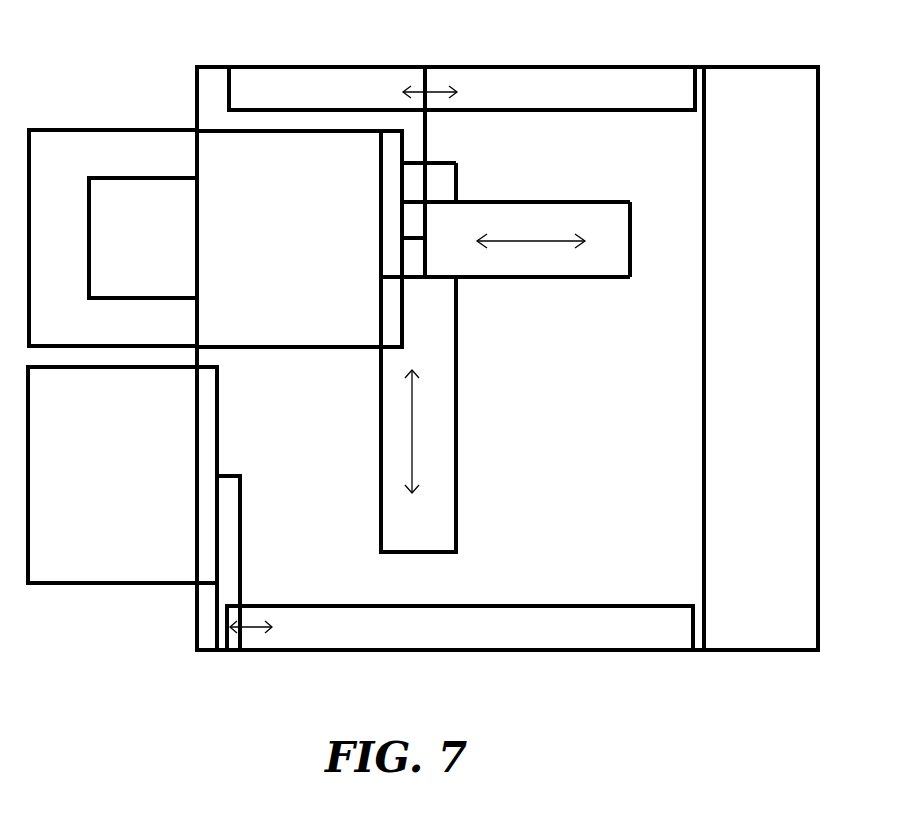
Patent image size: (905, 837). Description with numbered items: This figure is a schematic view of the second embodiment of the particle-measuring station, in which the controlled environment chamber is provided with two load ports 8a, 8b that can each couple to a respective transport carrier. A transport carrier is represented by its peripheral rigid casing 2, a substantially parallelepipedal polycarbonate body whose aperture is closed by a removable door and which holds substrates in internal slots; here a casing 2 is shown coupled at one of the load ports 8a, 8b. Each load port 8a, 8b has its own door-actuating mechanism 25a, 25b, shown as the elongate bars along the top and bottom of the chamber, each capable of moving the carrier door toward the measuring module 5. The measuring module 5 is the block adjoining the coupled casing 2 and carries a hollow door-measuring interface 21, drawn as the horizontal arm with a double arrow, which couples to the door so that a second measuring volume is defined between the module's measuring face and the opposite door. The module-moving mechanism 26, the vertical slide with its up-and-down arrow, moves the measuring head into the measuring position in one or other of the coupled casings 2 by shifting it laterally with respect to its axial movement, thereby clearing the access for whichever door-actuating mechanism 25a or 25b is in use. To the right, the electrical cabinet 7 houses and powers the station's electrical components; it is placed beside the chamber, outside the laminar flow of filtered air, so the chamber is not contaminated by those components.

The electrical cabinet 7 is at (737, 100).
The door-actuating mechanism 25b is at (555, 93).
The door-actuating mechanism 25a is at (365, 643).
The load port 8a is at (77, 152).
The load port 8b is at (87, 567).
The rigid casing 2 is at (122, 282).
The measuring module 5 is at (207, 200).
The door-measuring interface 21 is at (390, 193).
The module-moving mechanism 26 is at (442, 429).